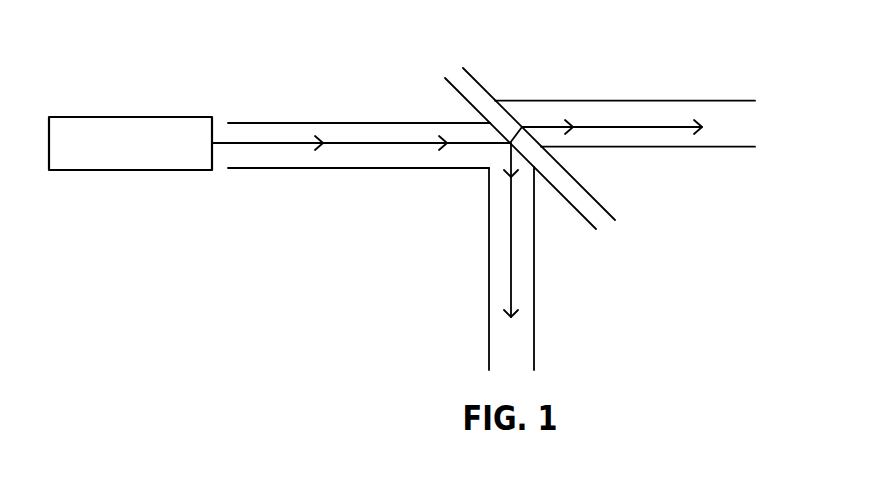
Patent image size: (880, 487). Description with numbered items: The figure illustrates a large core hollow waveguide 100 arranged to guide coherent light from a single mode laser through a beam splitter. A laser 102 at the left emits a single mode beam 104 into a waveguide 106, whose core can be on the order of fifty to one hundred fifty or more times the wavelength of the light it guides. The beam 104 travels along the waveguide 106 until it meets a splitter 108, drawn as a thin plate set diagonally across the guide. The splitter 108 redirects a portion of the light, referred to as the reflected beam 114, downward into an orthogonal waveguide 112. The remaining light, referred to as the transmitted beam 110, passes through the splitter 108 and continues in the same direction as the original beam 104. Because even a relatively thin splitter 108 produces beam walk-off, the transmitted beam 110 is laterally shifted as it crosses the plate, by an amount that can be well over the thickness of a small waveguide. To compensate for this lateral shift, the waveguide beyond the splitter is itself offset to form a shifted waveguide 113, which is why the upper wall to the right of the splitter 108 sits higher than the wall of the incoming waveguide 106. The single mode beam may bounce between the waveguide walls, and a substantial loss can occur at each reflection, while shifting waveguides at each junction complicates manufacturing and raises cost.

The large core hollow waveguide 100 is at (351, 75).
The laser 102 is at (130, 170).
The single mode beam 104 is at (340, 143).
The waveguide 106 is at (258, 168).
The splitter 108 is at (477, 80).
The transmitted beam 110 is at (677, 147).
The orthogonal waveguide 112 is at (535, 273).
The shifted waveguide 113 is at (620, 100).
The reflected beam 114 is at (510, 278).